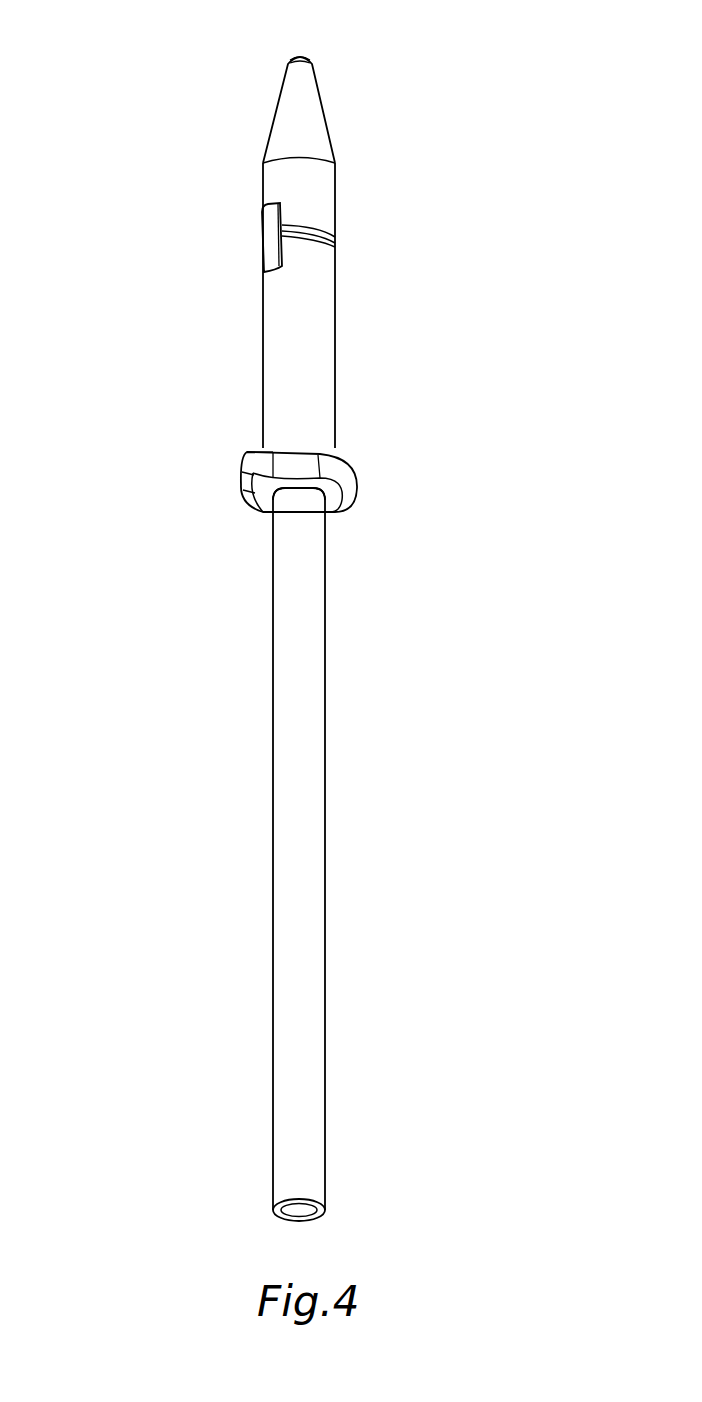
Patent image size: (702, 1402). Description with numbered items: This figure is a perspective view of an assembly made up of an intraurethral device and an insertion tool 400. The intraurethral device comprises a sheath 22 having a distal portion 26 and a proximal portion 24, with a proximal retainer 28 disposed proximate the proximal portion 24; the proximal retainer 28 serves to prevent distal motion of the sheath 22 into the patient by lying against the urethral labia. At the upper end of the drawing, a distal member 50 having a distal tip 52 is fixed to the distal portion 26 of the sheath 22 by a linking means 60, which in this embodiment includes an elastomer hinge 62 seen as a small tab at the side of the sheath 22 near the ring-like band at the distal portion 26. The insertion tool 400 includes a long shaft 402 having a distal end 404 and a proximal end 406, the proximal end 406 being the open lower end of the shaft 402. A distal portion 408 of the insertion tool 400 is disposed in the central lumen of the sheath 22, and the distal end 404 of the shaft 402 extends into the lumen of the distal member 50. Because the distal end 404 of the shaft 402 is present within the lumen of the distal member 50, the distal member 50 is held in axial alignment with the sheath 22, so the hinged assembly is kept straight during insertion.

The sheath 22 is at (292, 380).
The proximal portion 24 is at (347, 446).
The distal portion 26 is at (345, 252).
The proximal retainer 28 is at (262, 458).
The distal member 50 is at (298, 137).
The distal tip 52 is at (320, 50).
The linking means 60 is at (228, 200).
The elastomer hinge 62 is at (270, 242).
The insertion tool 400 is at (378, 827).
The shaft 402 is at (302, 940).
The distal end 404 is at (344, 536).
The proximal end 406 is at (350, 1201).
The distal portion 408 is at (299, 494).